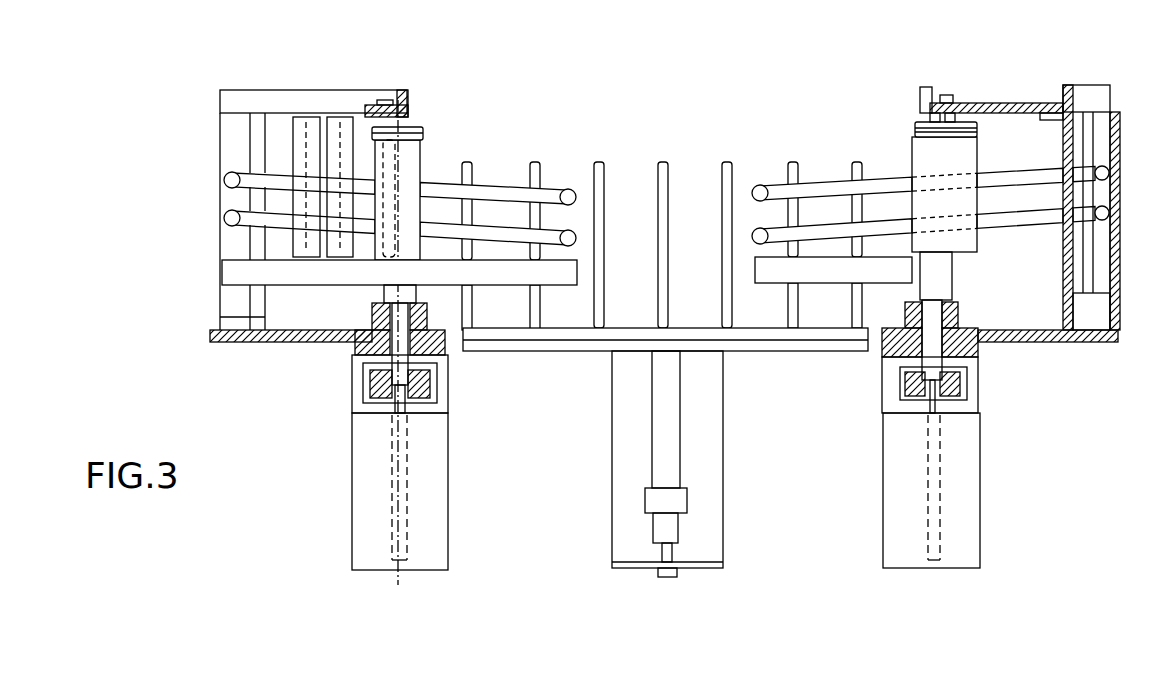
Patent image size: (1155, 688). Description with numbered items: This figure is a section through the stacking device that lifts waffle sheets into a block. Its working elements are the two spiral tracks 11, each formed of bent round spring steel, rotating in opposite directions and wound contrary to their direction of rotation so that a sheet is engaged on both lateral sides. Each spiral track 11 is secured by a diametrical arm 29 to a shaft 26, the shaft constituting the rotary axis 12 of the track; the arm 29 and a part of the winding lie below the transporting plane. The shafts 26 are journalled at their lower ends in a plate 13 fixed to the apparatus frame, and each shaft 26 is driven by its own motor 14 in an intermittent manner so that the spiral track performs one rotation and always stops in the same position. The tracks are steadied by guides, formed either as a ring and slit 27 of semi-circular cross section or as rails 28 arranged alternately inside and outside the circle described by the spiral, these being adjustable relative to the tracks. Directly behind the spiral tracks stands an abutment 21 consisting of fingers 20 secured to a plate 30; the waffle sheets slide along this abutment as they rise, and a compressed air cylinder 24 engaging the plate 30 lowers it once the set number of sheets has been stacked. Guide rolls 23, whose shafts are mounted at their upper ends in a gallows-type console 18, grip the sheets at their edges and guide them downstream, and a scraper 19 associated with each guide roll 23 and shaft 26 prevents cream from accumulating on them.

The spiral track 11 is at (447, 202).
The rotary axis 12 is at (397, 263).
The plate 13 is at (643, 328).
The motor 14 is at (417, 443).
The gallows-type console 18 is at (285, 110).
The scraper 19 is at (400, 92).
The finger 20 is at (598, 217).
The abutment 21 is at (598, 361).
The guide roll 23 is at (958, 150).
The compressed air cylinder 24 is at (663, 388).
The shaft 26 is at (405, 185).
The ring and slit 27 is at (1070, 270).
The guide rails 28 is at (338, 187).
The diametrical arm 29 is at (463, 270).
The plate 30 is at (838, 268).